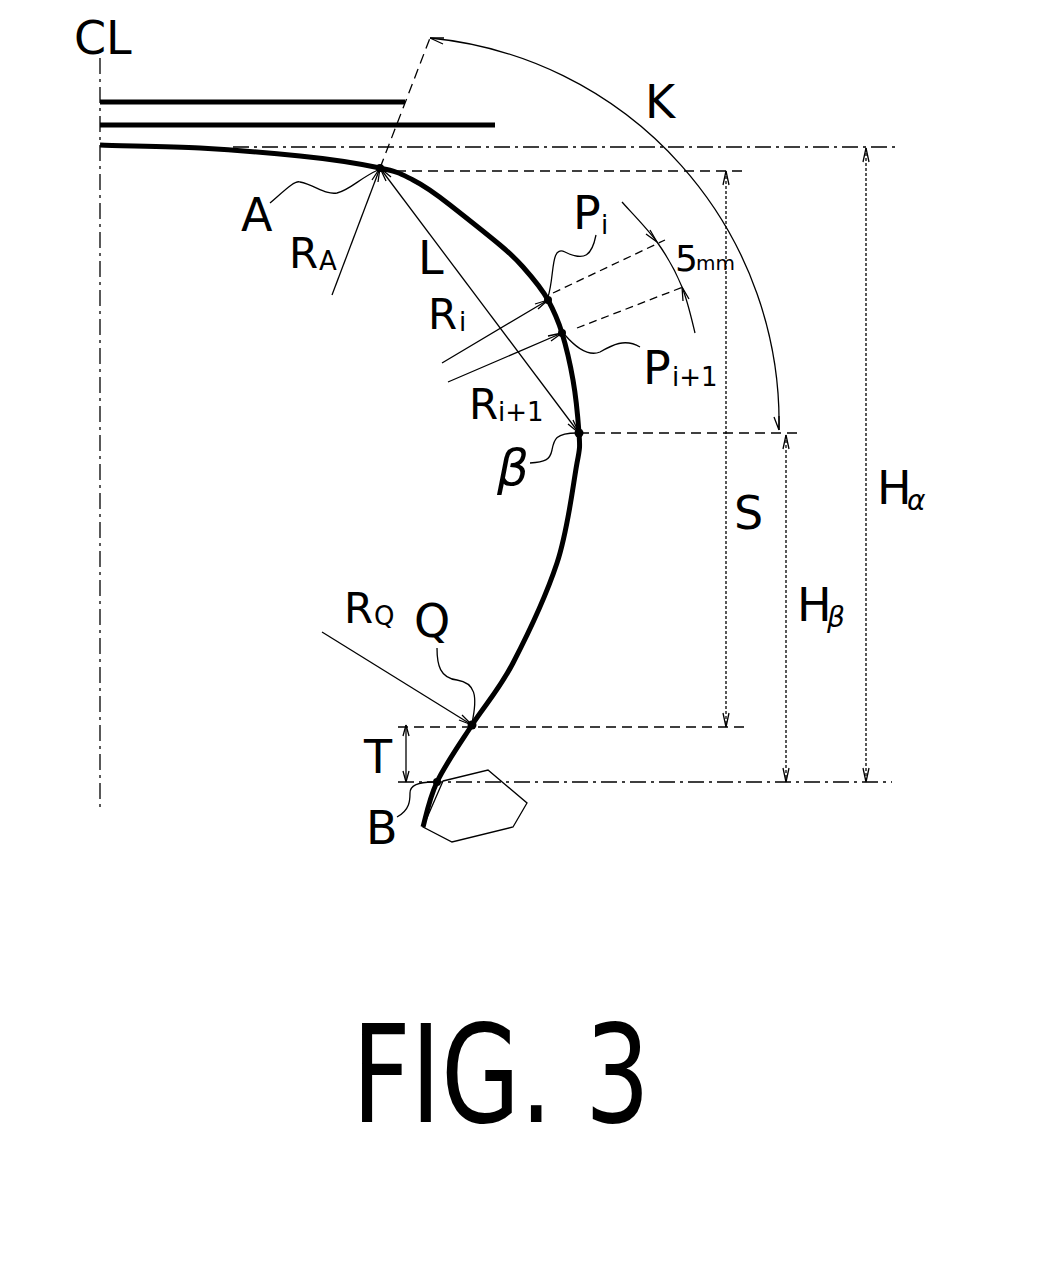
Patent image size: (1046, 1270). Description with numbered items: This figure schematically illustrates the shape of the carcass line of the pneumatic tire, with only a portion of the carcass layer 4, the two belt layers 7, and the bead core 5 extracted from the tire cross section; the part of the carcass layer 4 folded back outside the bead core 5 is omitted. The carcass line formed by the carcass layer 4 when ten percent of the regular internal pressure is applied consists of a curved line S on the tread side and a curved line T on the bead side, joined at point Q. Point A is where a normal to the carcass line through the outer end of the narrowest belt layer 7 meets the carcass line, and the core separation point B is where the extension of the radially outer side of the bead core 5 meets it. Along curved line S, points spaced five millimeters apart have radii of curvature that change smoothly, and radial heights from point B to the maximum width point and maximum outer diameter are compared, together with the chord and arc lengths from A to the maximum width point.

The carcass layer 4 is at (207, 148).
The bead core 5 is at (475, 810).
The belt layer 7 is at (187, 128).